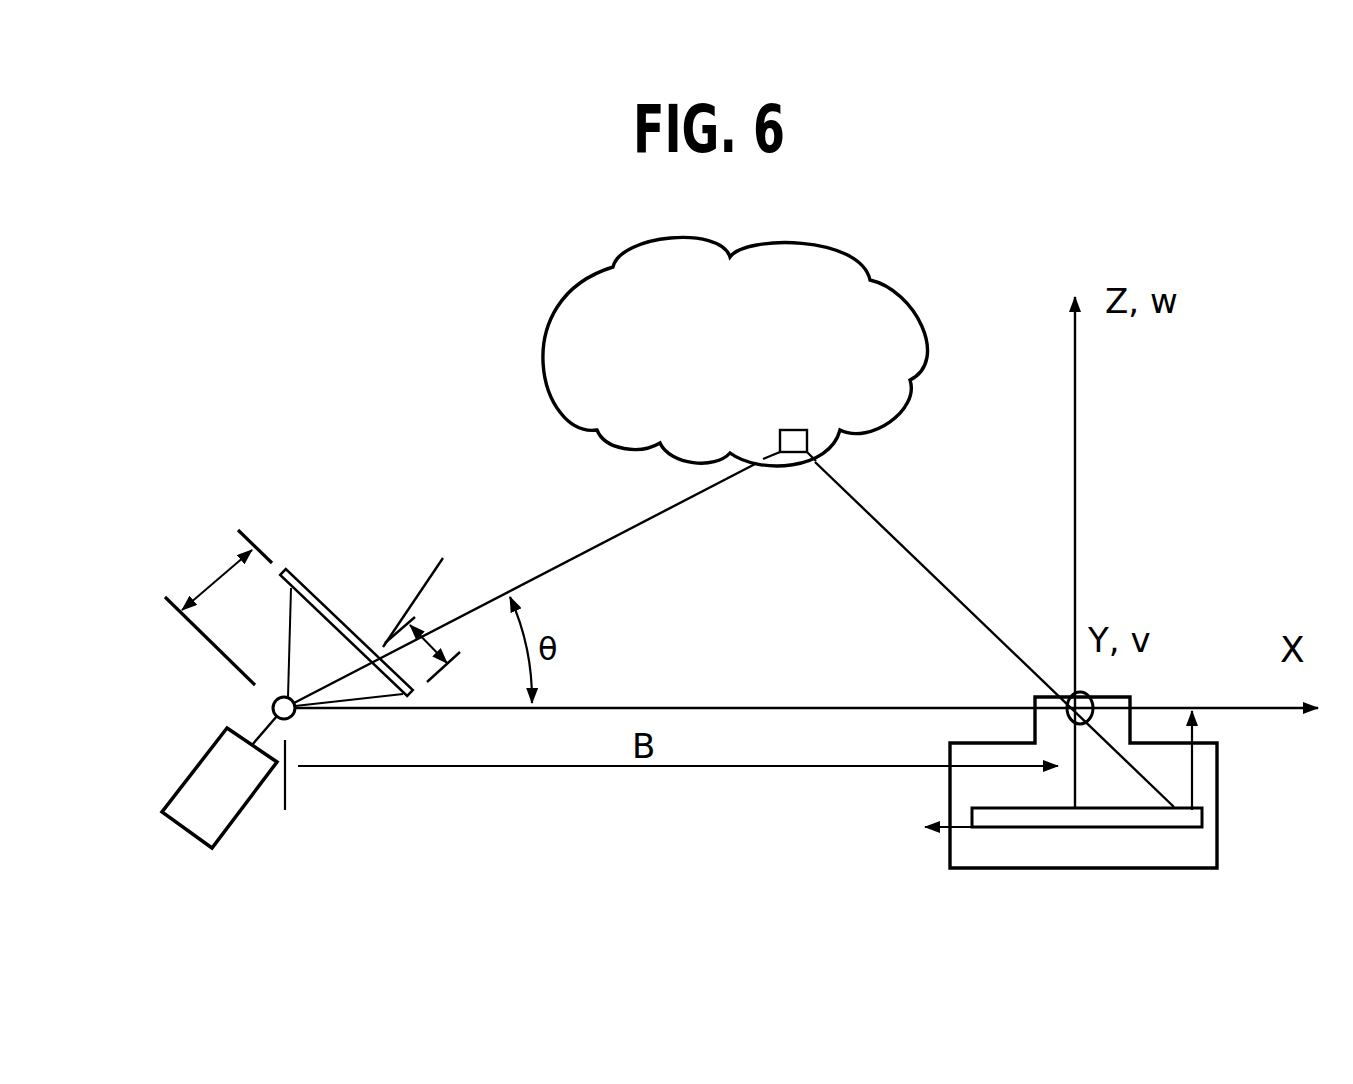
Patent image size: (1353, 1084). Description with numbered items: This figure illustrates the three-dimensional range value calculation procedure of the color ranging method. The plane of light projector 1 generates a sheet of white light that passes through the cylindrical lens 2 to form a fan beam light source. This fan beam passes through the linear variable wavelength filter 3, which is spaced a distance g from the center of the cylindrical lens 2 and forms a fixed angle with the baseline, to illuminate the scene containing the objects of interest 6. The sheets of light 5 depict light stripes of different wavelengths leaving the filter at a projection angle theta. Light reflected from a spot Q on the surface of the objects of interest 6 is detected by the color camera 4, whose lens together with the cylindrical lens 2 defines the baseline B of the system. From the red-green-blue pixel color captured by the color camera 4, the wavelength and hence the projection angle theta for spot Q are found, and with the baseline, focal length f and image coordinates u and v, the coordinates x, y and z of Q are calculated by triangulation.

The plane of light projector 1 is at (219, 782).
The cylindrical lens 2 is at (260, 699).
The linear variable wavelength filter 3 is at (300, 566).
The color camera 4 is at (1029, 665).
The shadow sheets of light 5 is at (525, 583).
The objects of interest 6 is at (740, 386).